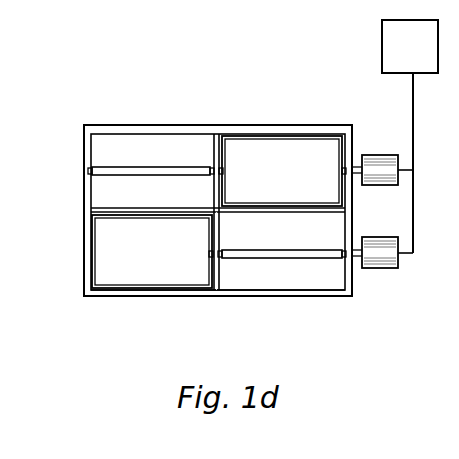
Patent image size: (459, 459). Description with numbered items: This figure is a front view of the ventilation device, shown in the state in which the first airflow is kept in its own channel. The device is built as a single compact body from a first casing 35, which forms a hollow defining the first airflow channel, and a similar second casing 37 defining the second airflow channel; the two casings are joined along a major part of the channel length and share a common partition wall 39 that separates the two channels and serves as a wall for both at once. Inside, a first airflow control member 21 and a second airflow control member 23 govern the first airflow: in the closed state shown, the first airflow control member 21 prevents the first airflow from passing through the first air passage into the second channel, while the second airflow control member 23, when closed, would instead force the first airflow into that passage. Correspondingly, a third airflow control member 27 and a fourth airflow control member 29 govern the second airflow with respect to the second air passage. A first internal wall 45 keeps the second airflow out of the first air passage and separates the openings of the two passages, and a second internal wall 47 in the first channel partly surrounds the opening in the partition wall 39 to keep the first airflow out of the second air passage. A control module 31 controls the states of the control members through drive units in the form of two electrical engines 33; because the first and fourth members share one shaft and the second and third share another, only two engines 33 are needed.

The first airflow control member 21 is at (110, 268).
The second airflow control member 23 is at (102, 172).
The third airflow control member 27 is at (293, 148).
The fourth airflow control member 29 is at (322, 256).
The control module 31 is at (402, 43).
The electrical engines 33 is at (391, 177).
The first casing 35 is at (170, 131).
The second casing 37 is at (266, 296).
The partition wall 39 is at (88, 212).
The first internal wall 45 is at (217, 277).
The second internal wall 47 is at (217, 145).